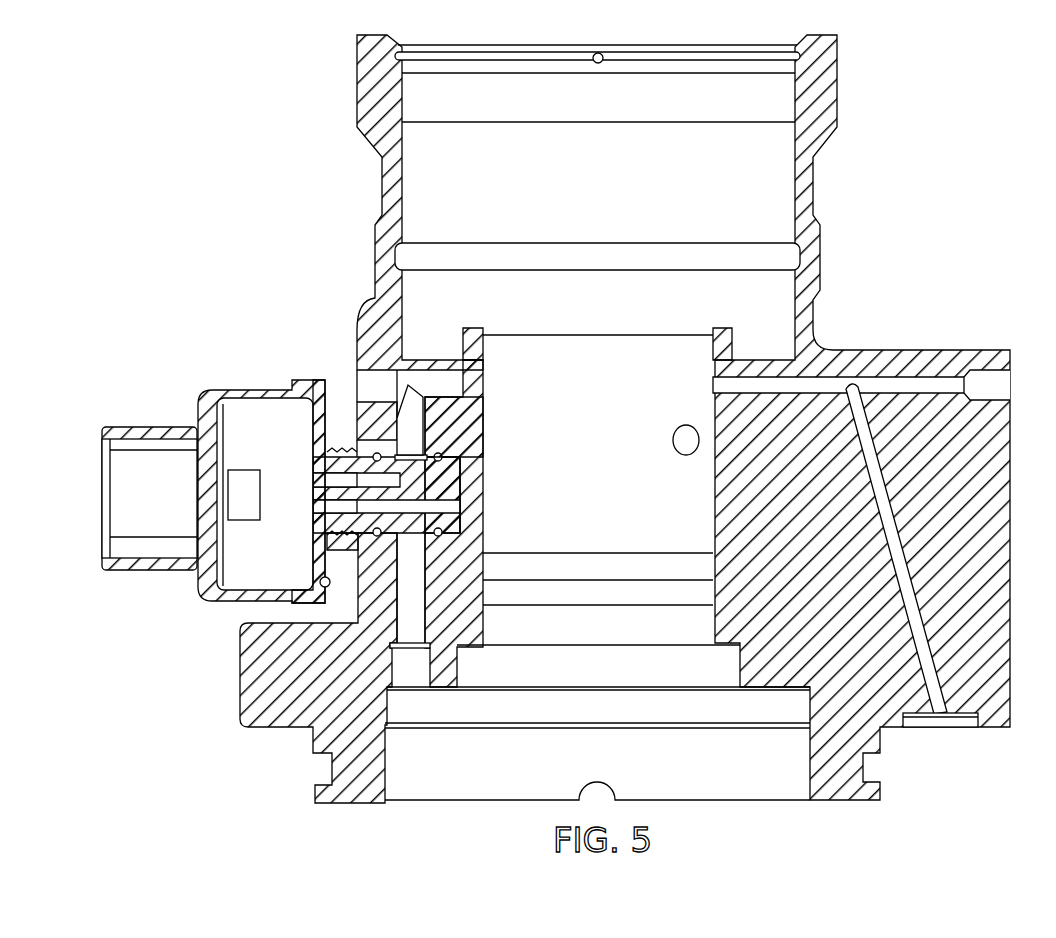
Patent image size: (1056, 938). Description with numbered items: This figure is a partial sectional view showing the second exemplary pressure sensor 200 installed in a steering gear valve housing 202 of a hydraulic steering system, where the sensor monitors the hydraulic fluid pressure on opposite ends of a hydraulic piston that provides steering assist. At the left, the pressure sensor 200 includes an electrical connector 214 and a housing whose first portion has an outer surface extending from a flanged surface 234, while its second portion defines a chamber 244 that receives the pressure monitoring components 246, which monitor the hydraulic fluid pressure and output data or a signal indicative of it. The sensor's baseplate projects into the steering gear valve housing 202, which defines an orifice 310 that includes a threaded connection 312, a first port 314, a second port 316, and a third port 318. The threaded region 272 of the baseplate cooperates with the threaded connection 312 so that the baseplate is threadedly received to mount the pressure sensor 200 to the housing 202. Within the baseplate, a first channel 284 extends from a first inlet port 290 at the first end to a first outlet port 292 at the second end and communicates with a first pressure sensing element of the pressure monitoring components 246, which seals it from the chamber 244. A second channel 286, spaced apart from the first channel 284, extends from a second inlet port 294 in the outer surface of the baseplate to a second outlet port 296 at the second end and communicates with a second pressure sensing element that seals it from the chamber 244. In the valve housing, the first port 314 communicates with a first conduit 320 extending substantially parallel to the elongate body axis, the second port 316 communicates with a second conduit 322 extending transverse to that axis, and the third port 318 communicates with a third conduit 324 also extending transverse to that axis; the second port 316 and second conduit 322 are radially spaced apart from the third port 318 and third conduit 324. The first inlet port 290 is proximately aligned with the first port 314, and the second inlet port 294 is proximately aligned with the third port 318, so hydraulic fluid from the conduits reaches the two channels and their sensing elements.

The second exemplary pressure sensor 200 is at (213, 459).
The steering gear valve housing 202 is at (834, 251).
The electrical connector 214 is at (126, 422).
The flanged surface 234 is at (300, 580).
The chamber 244 is at (240, 575).
The pressure monitoring components 246 is at (256, 503).
The threaded region 272 is at (419, 504).
The first channel 284 is at (391, 515).
The second channel 286 is at (391, 489).
The first inlet port 290 is at (460, 493).
The first outlet port 292 is at (313, 505).
The second inlet port 294 is at (440, 455).
The second outlet port 296 is at (313, 480).
The orifice 310 is at (457, 457).
The threaded connection 312 is at (348, 450).
The first port 314 is at (460, 482).
The second port 316 is at (395, 563).
The third port 318 is at (422, 470).
The first conduit 320 is at (460, 507).
The second conduit 322 is at (420, 537).
The third conduit 324 is at (397, 420).